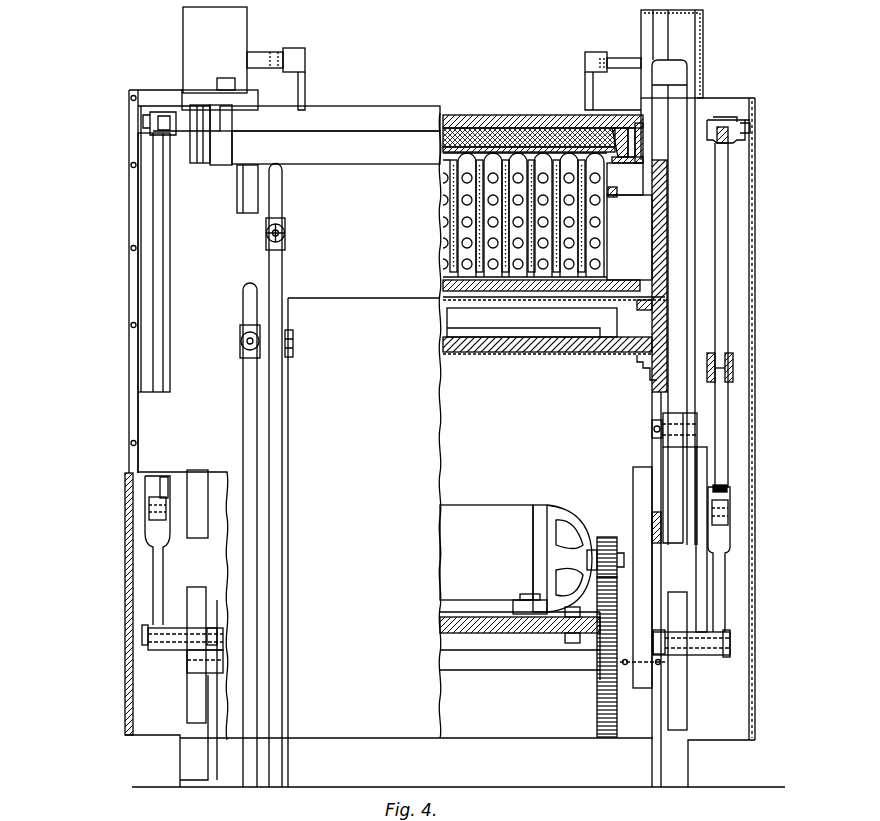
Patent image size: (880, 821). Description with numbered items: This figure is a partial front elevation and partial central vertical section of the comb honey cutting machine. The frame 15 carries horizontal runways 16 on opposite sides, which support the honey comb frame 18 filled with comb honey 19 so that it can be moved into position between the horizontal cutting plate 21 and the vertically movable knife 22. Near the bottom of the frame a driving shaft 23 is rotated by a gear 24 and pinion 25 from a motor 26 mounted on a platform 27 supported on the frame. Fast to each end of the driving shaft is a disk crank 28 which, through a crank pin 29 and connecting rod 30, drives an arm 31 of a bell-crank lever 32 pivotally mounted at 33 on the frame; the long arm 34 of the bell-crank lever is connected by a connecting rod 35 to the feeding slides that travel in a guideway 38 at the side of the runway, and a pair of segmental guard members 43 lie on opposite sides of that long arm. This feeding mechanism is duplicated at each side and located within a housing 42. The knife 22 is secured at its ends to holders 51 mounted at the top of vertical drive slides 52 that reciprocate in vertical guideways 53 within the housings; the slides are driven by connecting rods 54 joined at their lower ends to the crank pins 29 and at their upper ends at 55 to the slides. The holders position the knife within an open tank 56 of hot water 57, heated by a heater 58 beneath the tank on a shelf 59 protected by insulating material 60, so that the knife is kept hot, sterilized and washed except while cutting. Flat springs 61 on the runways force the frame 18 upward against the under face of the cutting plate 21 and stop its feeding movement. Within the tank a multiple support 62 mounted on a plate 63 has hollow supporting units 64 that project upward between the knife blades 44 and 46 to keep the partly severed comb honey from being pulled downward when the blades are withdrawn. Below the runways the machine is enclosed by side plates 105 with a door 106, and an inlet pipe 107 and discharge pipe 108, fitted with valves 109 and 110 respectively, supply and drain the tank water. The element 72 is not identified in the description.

The frame 15 is at (657, 382).
The horizontal runways 16 is at (228, 152).
The honey comb frame 18 is at (630, 125).
The comb honey 19 is at (508, 133).
The horizontal cutting plate 21 is at (476, 115).
The vertically movable knife 22 is at (452, 198).
The driving shaft 23 is at (512, 663).
The gear 24 is at (605, 725).
The pinion 25 is at (606, 537).
The motor 26 is at (493, 525).
The platform 27 is at (470, 625).
The disk crank 28 is at (195, 692).
The crank pin 29 is at (142, 635).
The connecting rod 30 is at (158, 548).
The arm of bell-crank lever 31 is at (147, 508).
The bell-crank lever 32 is at (158, 478).
The pivot 33 is at (163, 494).
The long arm of bell-crank lever 34 is at (158, 277).
The connecting rod 35 is at (160, 125).
The guideway 38 is at (207, 160).
The housing 42 is at (124, 582).
The segmental guard members 43 is at (733, 368).
The knife blades 44 is at (468, 228).
The knife blades 46 is at (465, 160).
The holders 51 is at (673, 62).
The vertical drive slides 52 is at (677, 97).
The vertical guideways 53 is at (678, 28).
The connecting rods 54 is at (702, 462).
The connection 55 is at (707, 427).
The open tank 56 is at (508, 305).
The hot water 57 is at (650, 247).
The heater 58 is at (550, 320).
The shelf 59 is at (592, 350).
The insulating material 60 is at (455, 285).
The flat springs 61 is at (620, 150).
The multiple support 62 is at (641, 248).
The plate 63 is at (445, 300).
The hollow supporting units 64 is at (543, 160).
The bracket 72 is at (268, 60).
The side plates 105 is at (160, 423).
The door 106 is at (373, 722).
The inlet pipe 107 is at (278, 279).
The discharge pipe 108 is at (250, 313).
The valve 109 is at (288, 234).
The valve 110 is at (244, 343).